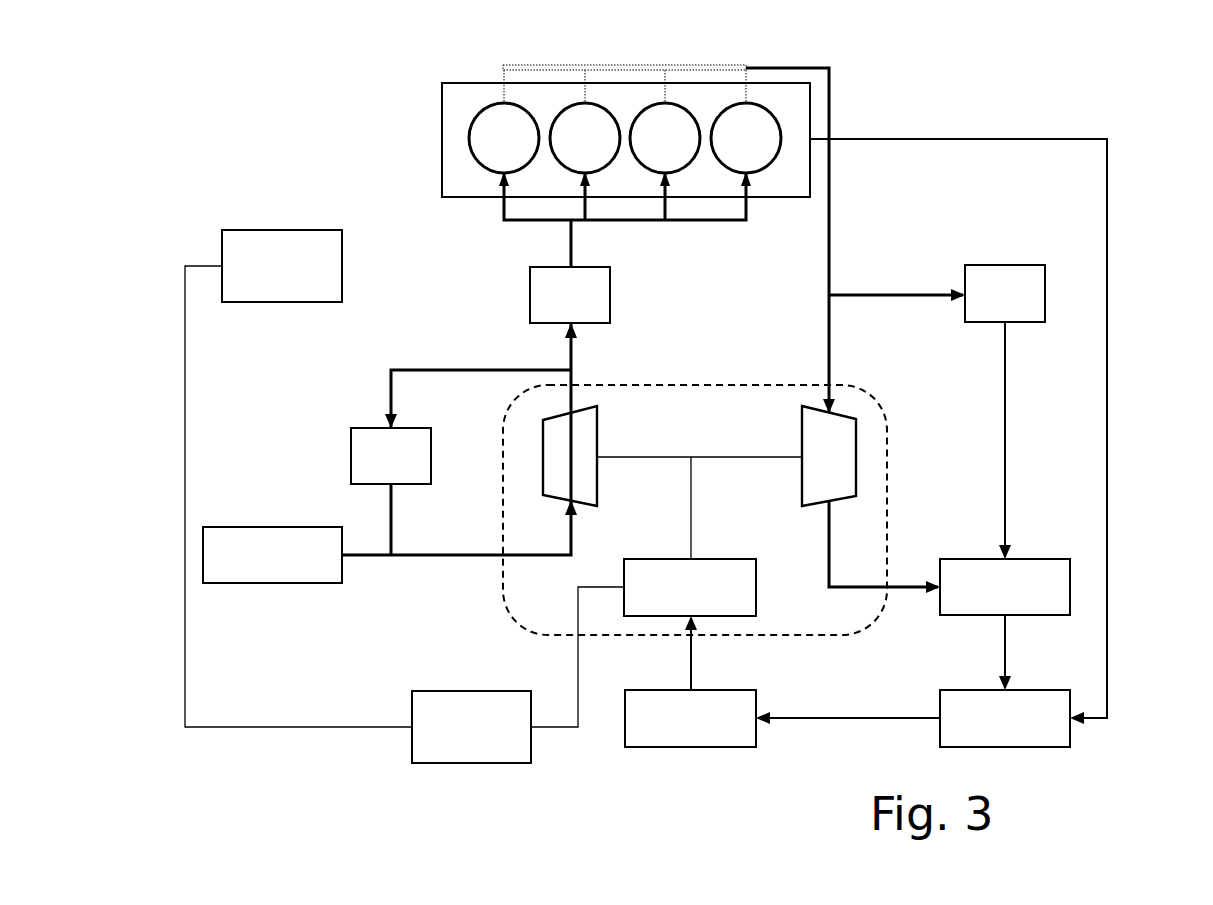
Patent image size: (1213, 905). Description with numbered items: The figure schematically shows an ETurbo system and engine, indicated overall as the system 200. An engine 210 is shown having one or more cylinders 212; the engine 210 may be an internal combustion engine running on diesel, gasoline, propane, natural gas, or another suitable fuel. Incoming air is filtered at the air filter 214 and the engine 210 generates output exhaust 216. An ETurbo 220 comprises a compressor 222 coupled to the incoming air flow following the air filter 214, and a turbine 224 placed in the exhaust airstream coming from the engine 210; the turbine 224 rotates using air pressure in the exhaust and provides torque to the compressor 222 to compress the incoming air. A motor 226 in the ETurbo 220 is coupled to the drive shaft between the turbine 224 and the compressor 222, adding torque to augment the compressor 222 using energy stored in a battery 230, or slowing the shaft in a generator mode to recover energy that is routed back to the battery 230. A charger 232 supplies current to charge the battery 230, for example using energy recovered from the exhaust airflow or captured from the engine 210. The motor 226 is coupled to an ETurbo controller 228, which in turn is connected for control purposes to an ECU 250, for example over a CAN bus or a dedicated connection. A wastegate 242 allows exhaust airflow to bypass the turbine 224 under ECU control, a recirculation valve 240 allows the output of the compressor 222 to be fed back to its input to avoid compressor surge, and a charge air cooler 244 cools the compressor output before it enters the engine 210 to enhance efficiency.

The system 200 is at (880, 82).
The engine 210 is at (450, 102).
The cylinders 212 is at (473, 148).
The air filter 214 is at (266, 583).
The exhaust 216 is at (1050, 568).
The ETurbo 220 is at (770, 635).
The compressor 222 is at (588, 410).
The turbine 224 is at (840, 412).
The motor 226 is at (703, 559).
The ETurbo controller 228 is at (427, 753).
The battery 230 is at (691, 747).
The charger 232 is at (1017, 747).
The recirculation valve 240 is at (370, 433).
The wastegate 242 is at (985, 266).
The charge air cooler 244 is at (535, 312).
The ECU 250 is at (300, 238).